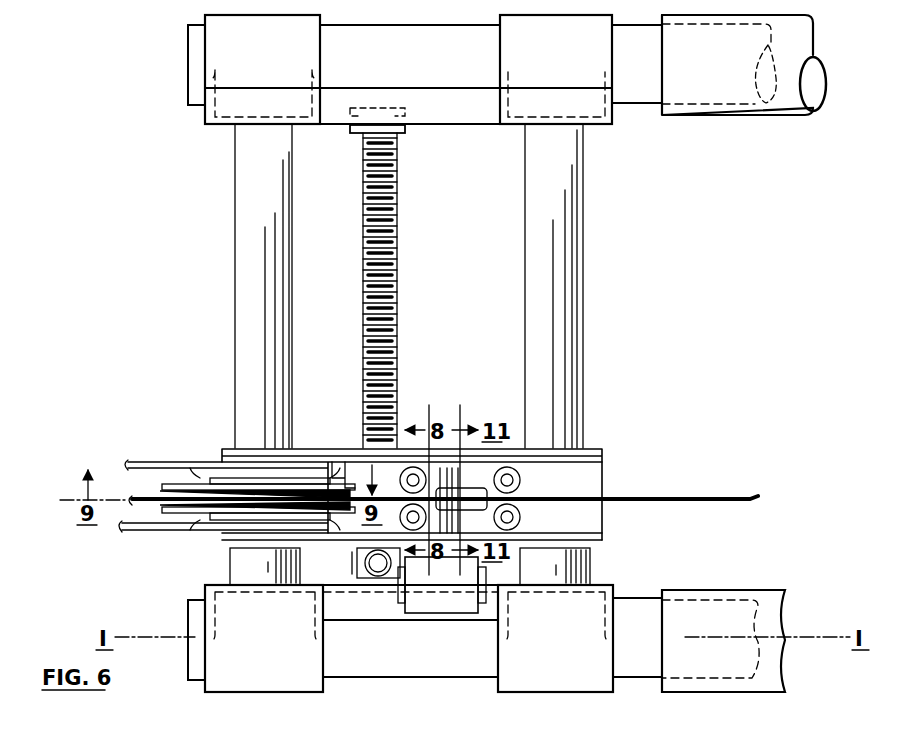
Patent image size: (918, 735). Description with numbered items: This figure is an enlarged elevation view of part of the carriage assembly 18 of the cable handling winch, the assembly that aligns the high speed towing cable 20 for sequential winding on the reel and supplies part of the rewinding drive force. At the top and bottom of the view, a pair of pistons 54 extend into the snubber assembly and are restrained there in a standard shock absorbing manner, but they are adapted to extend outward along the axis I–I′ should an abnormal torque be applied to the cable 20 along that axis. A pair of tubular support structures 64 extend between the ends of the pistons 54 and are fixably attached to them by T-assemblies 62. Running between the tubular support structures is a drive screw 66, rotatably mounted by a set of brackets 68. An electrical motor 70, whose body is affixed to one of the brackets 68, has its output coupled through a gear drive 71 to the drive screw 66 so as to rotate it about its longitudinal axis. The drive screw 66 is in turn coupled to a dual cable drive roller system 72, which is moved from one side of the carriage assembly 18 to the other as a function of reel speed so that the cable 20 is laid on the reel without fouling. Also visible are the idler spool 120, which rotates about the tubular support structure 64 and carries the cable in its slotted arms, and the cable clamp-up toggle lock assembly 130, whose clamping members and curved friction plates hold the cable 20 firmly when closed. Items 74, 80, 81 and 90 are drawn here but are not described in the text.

The carriage assembly 18 is at (232, 167).
The high speed towing cable 20 is at (703, 510).
The pistons 54 is at (635, 75).
The T-assemblies 62 is at (279, 67).
The tubular support structures 64 is at (265, 235).
The drive screw 66 is at (385, 256).
The brackets 68 is at (418, 105).
The electrical motor 70 is at (437, 590).
The gear drive 71 is at (378, 574).
The dual cable drive roller system 72 is at (274, 440).
The roller 74 is at (515, 475).
The clamp disc 80 is at (235, 542).
The bracket 81 is at (350, 458).
The roller 90 is at (403, 470).
The idler spool 120 is at (165, 510).
The cable clamp-up toggle lock assembly 130 is at (472, 505).